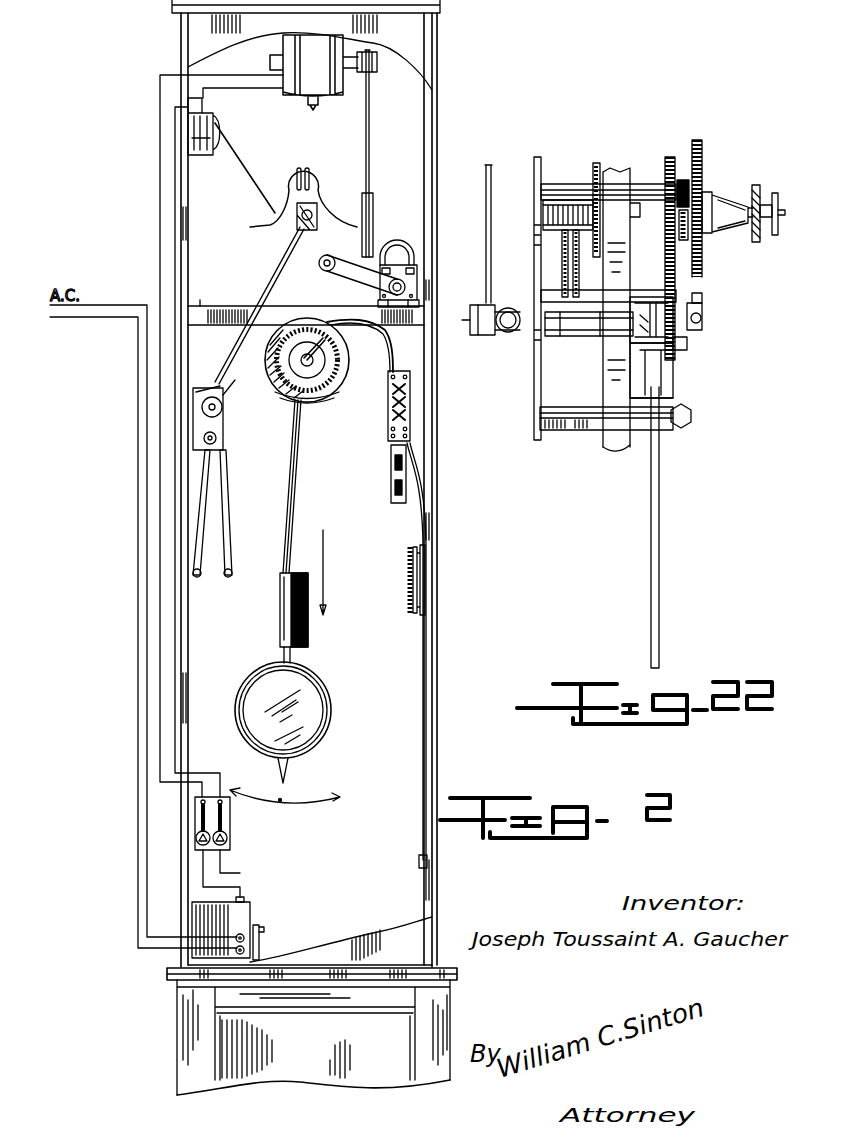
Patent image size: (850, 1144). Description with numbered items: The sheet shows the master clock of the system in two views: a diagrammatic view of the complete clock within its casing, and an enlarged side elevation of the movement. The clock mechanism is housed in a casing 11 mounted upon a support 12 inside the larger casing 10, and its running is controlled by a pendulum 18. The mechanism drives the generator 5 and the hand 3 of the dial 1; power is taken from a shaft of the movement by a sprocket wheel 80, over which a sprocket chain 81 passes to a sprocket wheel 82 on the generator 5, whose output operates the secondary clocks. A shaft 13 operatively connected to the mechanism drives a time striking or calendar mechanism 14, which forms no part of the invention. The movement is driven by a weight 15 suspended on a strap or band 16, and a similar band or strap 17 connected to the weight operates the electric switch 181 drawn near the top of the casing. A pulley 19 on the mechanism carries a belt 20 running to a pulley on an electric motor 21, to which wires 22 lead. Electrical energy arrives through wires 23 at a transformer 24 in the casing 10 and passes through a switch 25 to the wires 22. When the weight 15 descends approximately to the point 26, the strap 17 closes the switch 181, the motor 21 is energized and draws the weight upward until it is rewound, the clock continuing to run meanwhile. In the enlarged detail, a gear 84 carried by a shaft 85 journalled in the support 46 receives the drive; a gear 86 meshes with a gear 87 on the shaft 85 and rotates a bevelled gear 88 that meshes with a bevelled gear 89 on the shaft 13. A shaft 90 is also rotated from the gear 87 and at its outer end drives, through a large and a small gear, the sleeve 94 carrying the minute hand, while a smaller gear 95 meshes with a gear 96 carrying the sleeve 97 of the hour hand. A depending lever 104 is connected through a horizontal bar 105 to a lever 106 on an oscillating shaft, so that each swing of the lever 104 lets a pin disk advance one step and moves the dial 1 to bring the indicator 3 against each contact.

In FIG. 2, the dial 1 is at (337, 390).
In FIG. 2, the hand 3 is at (323, 347).
In FIG. 2, the generator 5 is at (417, 267).
In FIG. 2, the casing 10 is at (430, 627).
In FIG. 2, the casing 11 is at (322, 220).
In FIG. 2, the support 12 is at (202, 313).
In FIG. 2, the shaft 13 is at (277, 277).
In FIG. 22, the shaft 13 is at (662, 498).
In FIG. 2, the mechanism 14 is at (223, 443).
In FIG. 2, the weight 15 is at (310, 630).
In FIG. 2, the strap or band 16 is at (300, 490).
In FIG. 2, the band or strap 17 is at (252, 163).
In FIG. 2, the pendulum 18 is at (317, 710).
In FIG. 2, the pulley 19 is at (373, 197).
In FIG. 2, the belt 20 is at (370, 123).
In FIG. 2, the electric motor 21 is at (328, 100).
In FIG. 2, the wires 22 is at (155, 202).
In FIG. 2, the wires 23 is at (127, 300).
In FIG. 2, the transformer 24 is at (240, 913).
In FIG. 2, the switch 25 is at (232, 830).
In FIG. 2, the point 26 is at (393, 343).
In FIG. 22, the support 46 is at (617, 437).
In FIG. 2, the sprocket wheel 80 is at (319, 263).
In FIG. 2, the sprocket chain 81 is at (342, 262).
In FIG. 2, the sprocket wheel 82 is at (410, 287).
In FIG. 22, the gear 84 is at (599, 165).
In FIG. 22, the shaft 85 is at (640, 202).
In FIG. 22, the gear 86 is at (573, 260).
In FIG. 22, the gear 87 is at (563, 187).
In FIG. 22, the bevelled gear 88 is at (702, 297).
In FIG. 22, the bevelled gear 89 is at (683, 343).
In FIG. 22, the shaft 90 is at (650, 297).
In FIG. 22, the sleeve 94 is at (762, 193).
In FIG. 22, the gear 95 is at (702, 310).
In FIG. 22, the gear 96 is at (703, 150).
In FIG. 22, the sleeve 97 is at (722, 195).
In FIG. 22, the lever 104 is at (522, 443).
In FIG. 22, the horizontal bar 105 is at (493, 350).
In FIG. 22, the lever 106 is at (492, 187).
In FIG. 2, the relay 181 is at (205, 122).